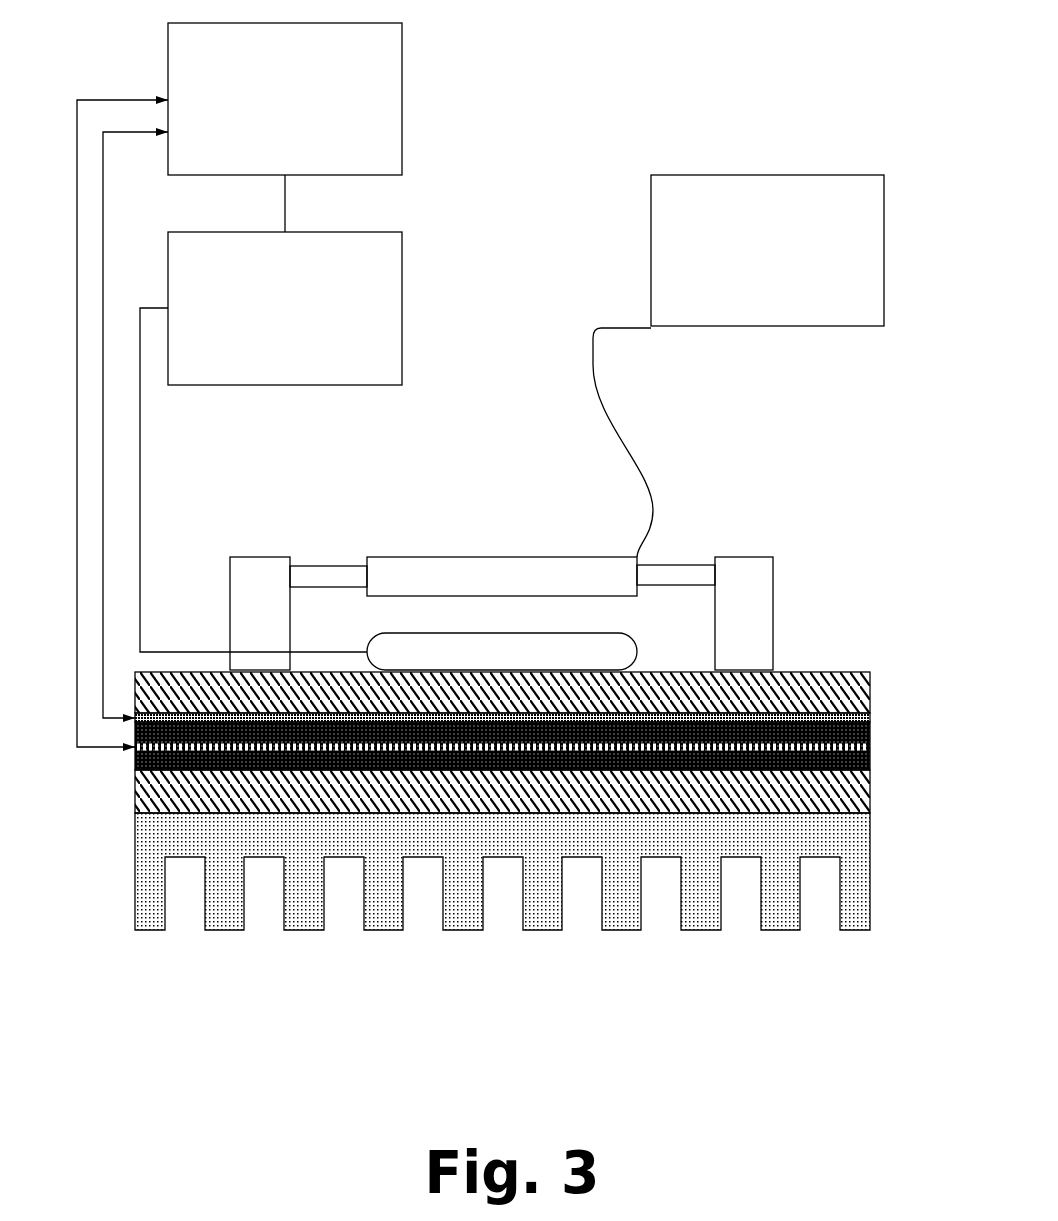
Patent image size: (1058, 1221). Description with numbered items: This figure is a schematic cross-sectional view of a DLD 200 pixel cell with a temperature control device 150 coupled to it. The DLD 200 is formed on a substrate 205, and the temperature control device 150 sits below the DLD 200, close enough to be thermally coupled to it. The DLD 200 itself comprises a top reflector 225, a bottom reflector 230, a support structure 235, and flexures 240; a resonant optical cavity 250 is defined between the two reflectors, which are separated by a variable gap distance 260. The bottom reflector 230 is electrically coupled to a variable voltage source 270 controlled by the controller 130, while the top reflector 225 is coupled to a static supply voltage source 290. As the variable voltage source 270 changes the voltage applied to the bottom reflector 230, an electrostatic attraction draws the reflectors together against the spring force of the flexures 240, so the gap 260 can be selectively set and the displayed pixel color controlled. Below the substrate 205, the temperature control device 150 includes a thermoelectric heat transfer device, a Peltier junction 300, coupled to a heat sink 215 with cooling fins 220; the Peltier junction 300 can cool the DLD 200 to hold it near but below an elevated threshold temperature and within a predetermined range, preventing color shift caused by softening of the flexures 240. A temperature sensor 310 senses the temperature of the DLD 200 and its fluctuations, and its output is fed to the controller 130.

The controller 130 is at (285, 99).
The variable voltage source 270 is at (285, 308).
The static supply voltage source 290 is at (767, 250).
The DLD 200 is at (514, 492).
The support structure 235 is at (248, 557).
The flexures 240 is at (330, 566).
The top reflector 225 is at (504, 557).
The bottom reflector 230 is at (502, 651).
The resonant optical cavity 250 is at (449, 617).
The variable gap distance 260 is at (375, 613).
The substrate 205 is at (873, 690).
The temperature sensor 310 is at (873, 718).
The Peltier junction 300 is at (873, 744).
The temperature control device 150 is at (501, 812).
The heat sink 215 is at (882, 870).
The cooling fins 220 is at (693, 930).